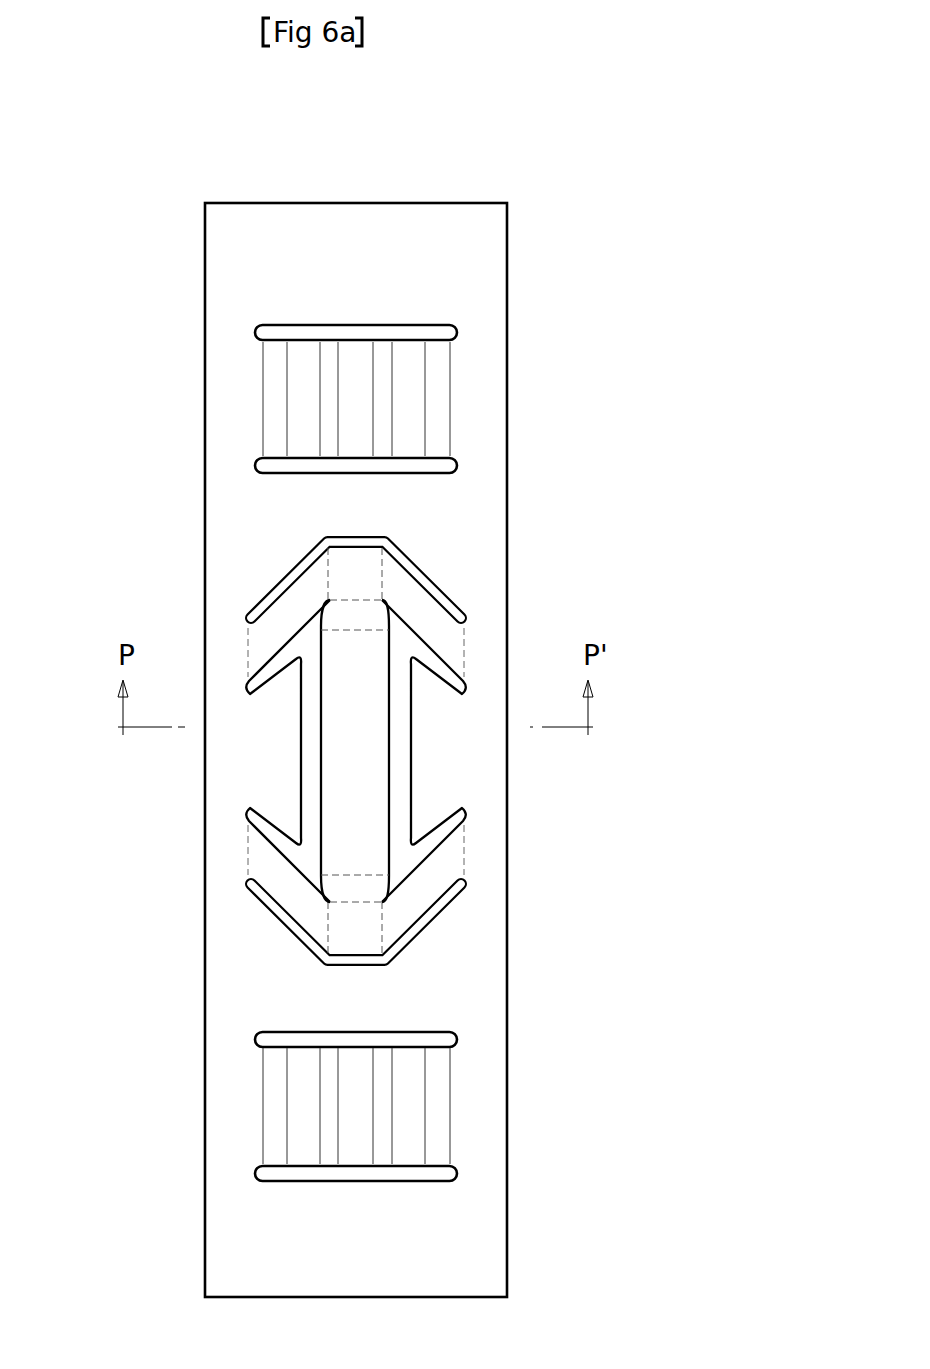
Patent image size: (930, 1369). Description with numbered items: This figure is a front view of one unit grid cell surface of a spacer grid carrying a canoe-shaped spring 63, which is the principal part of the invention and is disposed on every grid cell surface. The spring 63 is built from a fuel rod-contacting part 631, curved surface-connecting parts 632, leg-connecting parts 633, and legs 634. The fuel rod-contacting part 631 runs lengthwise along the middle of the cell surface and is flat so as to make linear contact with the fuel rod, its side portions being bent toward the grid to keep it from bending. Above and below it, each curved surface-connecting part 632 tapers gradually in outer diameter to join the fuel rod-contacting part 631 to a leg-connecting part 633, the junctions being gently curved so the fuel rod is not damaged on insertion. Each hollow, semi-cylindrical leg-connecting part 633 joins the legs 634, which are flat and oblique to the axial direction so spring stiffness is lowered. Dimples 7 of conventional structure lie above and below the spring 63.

The dimples 7 is at (298, 383).
The canoe-shaped spring 63 is at (359, 698).
The fuel rod-contacting part 631 is at (337, 784).
The curved surface-connecting part 632 is at (380, 622).
The leg-connecting part 633 is at (362, 565).
The legs 634 is at (287, 610).